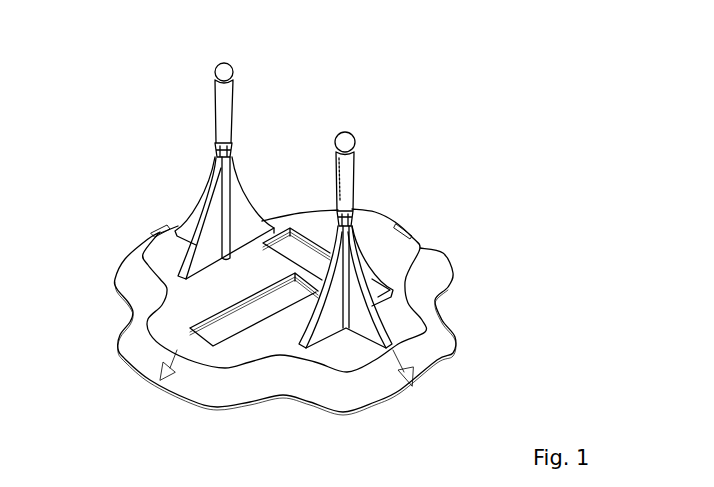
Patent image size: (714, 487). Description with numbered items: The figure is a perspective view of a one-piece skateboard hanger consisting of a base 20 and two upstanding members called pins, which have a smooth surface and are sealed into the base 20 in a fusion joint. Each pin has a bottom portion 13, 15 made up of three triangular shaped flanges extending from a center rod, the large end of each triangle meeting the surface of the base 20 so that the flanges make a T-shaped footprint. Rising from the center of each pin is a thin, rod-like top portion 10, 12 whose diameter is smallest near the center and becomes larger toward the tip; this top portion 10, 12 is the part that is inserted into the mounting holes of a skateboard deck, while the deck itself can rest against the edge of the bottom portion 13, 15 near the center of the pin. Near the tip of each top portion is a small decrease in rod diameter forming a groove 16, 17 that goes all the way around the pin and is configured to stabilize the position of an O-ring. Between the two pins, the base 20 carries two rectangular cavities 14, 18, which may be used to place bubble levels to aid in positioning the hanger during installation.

The top portion of pin 10 is at (212, 108).
The top portion of pin 12 is at (353, 177).
The bottom portion of pin 13 is at (368, 276).
The rectangular cavity 14 is at (298, 248).
The bottom portion of pin 15 is at (192, 192).
The groove near tip of pin 16 is at (362, 140).
The groove near tip of pin 17 is at (211, 62).
The rectangular cavity 18 is at (273, 323).
The base 20 is at (437, 298).